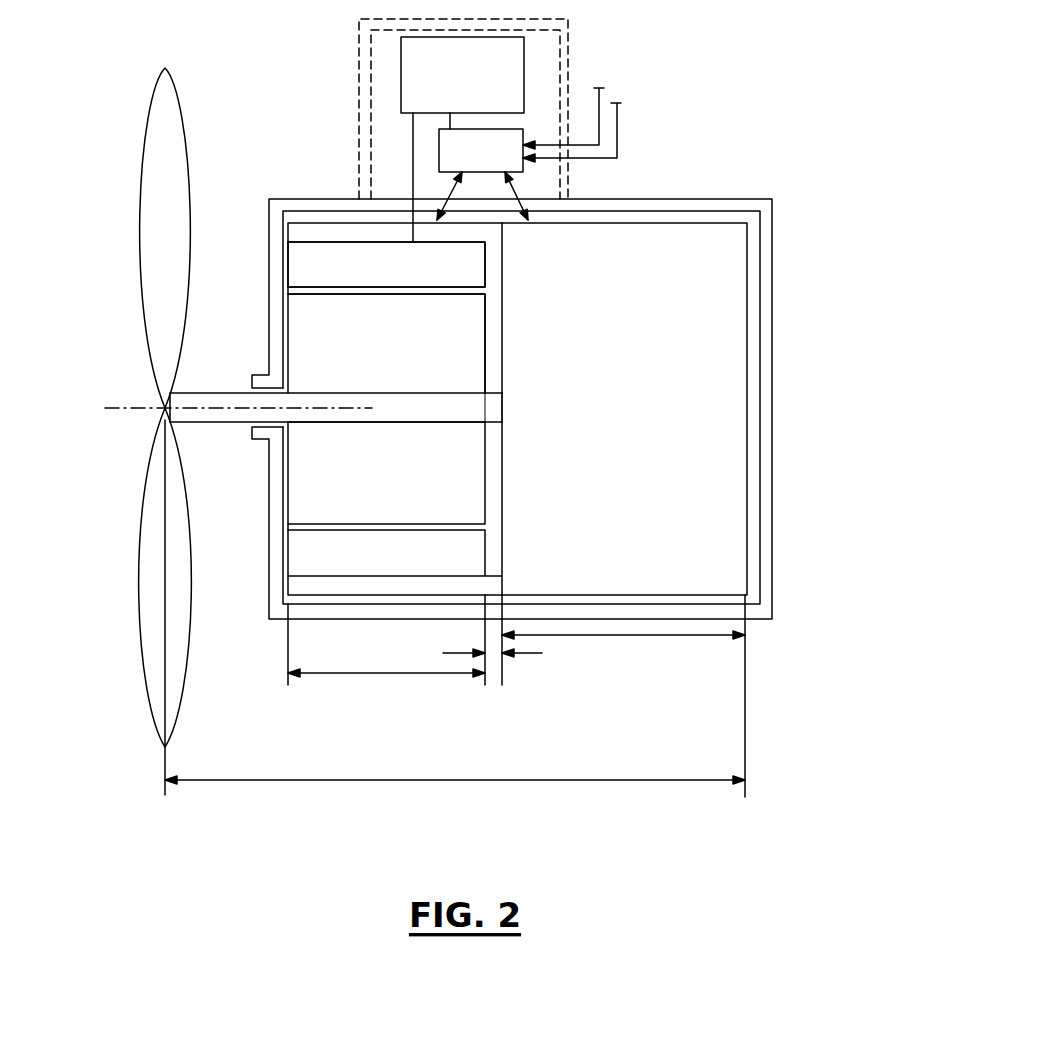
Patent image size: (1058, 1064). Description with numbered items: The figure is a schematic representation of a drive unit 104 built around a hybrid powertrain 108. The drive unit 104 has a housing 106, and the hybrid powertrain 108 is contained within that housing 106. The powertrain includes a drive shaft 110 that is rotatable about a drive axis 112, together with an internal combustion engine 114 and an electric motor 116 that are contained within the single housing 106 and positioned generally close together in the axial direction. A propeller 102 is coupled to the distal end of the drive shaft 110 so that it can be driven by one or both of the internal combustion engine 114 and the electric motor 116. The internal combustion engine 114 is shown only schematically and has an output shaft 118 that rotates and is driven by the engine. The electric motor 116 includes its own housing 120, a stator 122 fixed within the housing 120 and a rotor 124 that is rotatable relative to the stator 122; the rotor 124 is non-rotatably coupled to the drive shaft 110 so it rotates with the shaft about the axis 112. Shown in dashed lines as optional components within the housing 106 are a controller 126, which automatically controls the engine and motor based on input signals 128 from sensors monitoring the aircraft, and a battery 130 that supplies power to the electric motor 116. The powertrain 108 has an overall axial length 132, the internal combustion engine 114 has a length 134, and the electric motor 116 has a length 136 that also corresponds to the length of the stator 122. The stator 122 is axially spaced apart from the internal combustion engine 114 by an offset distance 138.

The propeller 102 is at (150, 643).
The drive unit 104 is at (745, 160).
The housing 106 is at (773, 238).
The hybrid powertrain 108 is at (567, 640).
The drive shaft 110 is at (215, 422).
The drive axis 112 is at (125, 410).
The internal combustion engine 114 is at (728, 418).
The electric motor 116 is at (258, 220).
The output shaft 118 is at (495, 408).
The housing 120 is at (298, 582).
The stator 122 is at (298, 262).
The rotor 124 is at (298, 330).
The controller 126 is at (482, 174).
The input signals 128 is at (626, 68).
The battery 130 is at (462, 139).
The overall length 132 is at (260, 783).
The length 134 is at (653, 637).
The length 136 is at (385, 675).
The offset distance 138 is at (533, 655).